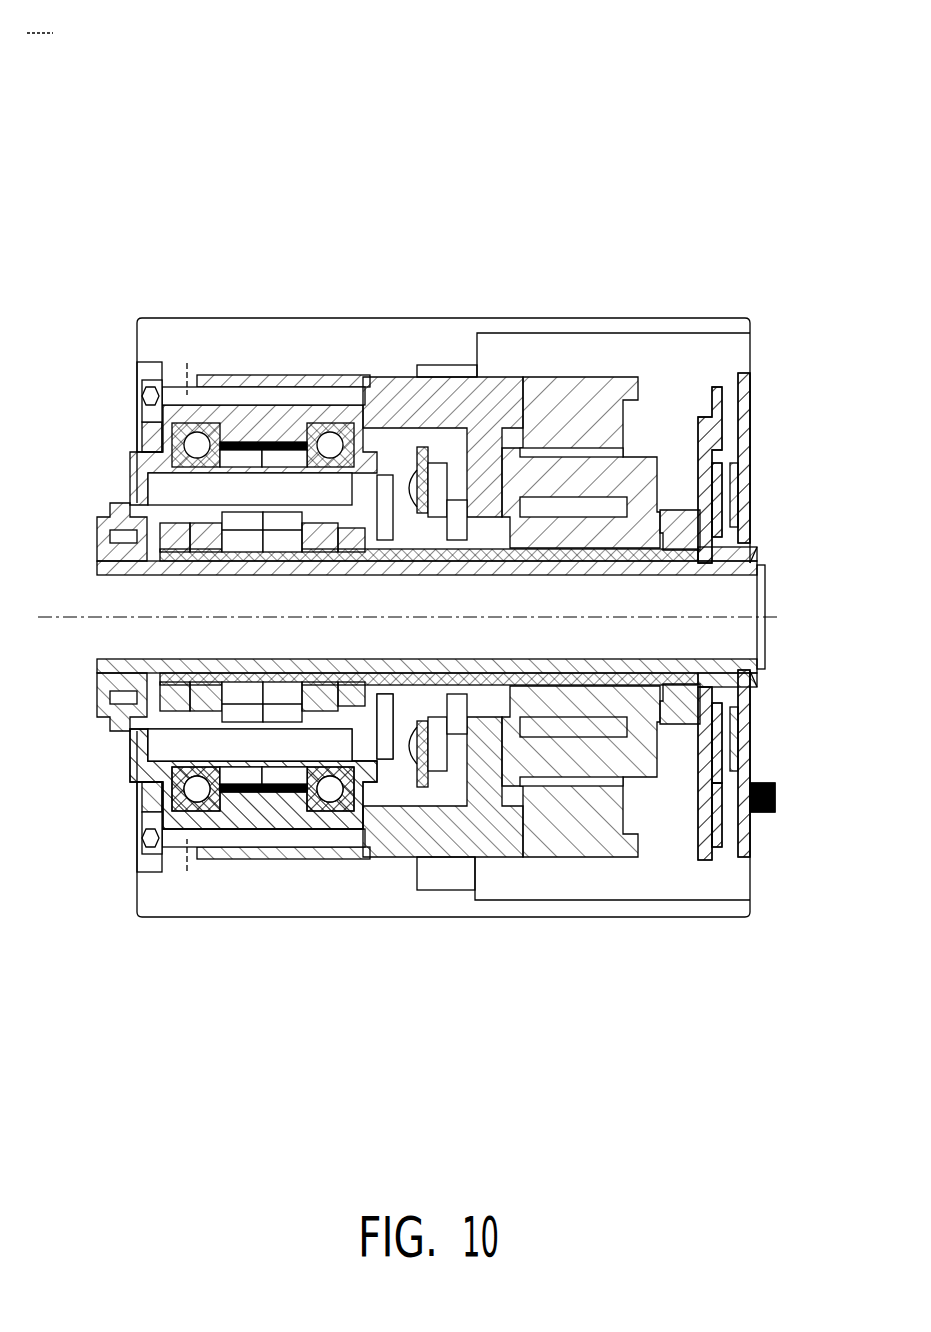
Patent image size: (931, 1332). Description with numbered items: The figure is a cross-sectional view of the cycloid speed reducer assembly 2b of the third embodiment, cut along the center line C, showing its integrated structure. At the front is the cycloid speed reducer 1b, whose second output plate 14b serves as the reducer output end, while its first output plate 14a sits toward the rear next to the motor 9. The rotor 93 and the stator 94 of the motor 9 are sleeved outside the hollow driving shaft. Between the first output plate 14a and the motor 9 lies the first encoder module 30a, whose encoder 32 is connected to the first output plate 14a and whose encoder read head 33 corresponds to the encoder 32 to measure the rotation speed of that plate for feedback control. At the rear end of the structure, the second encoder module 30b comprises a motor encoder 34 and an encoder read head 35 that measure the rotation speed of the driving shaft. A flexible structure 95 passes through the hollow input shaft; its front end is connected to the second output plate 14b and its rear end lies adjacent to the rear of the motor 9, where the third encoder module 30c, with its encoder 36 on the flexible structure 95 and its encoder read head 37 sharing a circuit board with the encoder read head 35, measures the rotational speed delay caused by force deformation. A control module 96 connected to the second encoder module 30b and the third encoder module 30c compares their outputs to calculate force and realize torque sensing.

The cycloid speed reducer assembly 2b is at (40, 17).
The cycloid speed reducer 1b is at (187, 395).
The second output plate 14b is at (137, 503).
The first output plate 14a is at (372, 445).
The rotor 93 is at (570, 512).
The stator 94 is at (597, 478).
The motor encoder 34 is at (712, 427).
The encoder read head 35 is at (755, 500).
The second encoder module 30b is at (788, 263).
The control module 96 is at (730, 525).
The central axis C is at (395, 623).
The flexible structure 95 is at (123, 680).
The encoder 32 is at (352, 830).
The encoder read head 33 is at (420, 787).
The motor 9 is at (567, 857).
The encoder 36 is at (700, 860).
The encoder read head 37 is at (752, 813).
The first encoder module 30a is at (500, 977).
The third encoder module 30c is at (803, 957).